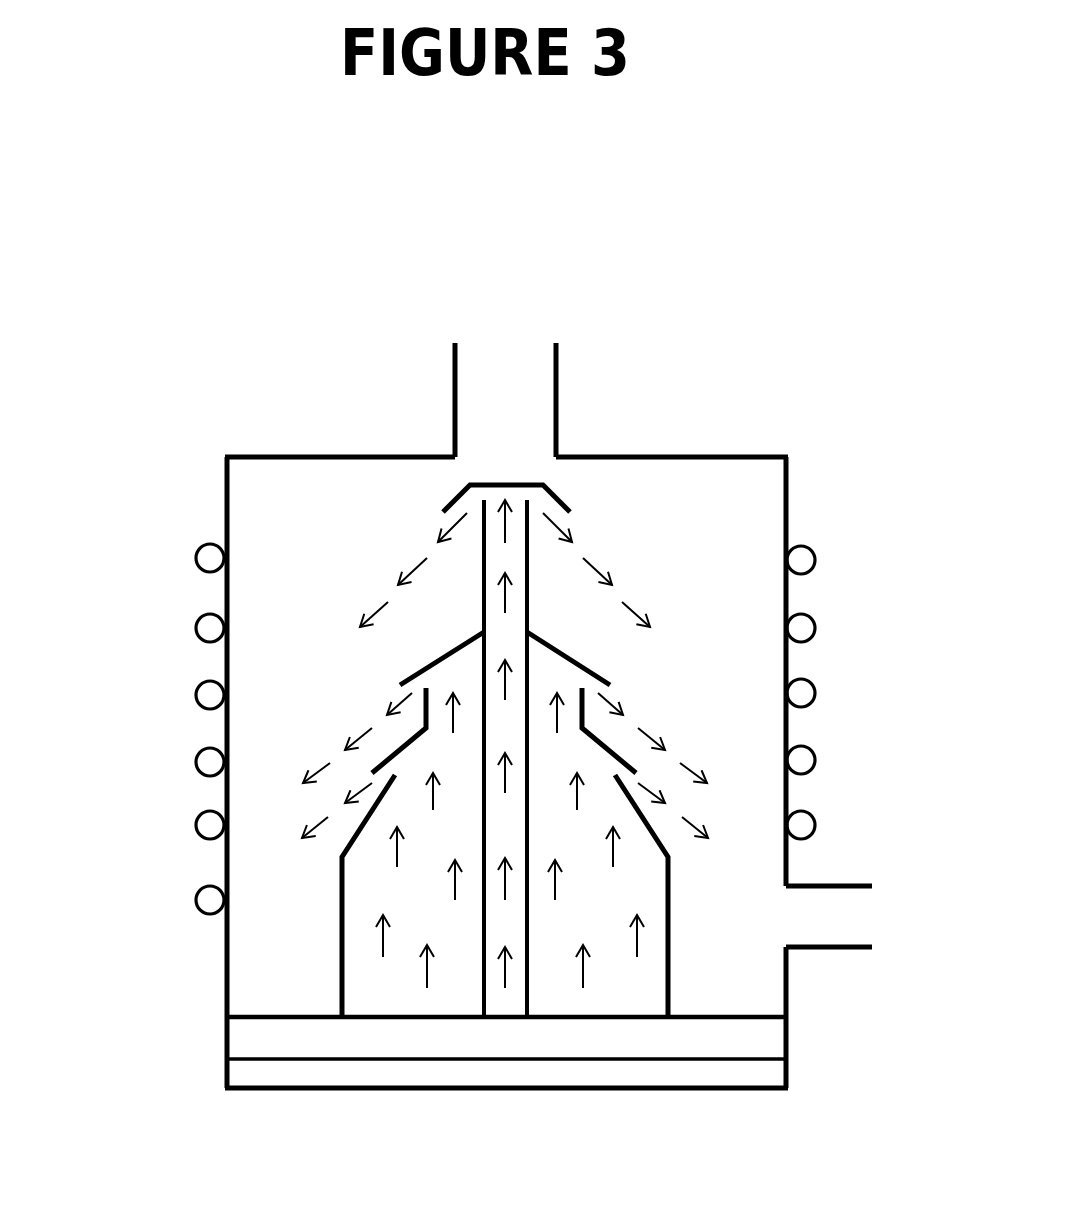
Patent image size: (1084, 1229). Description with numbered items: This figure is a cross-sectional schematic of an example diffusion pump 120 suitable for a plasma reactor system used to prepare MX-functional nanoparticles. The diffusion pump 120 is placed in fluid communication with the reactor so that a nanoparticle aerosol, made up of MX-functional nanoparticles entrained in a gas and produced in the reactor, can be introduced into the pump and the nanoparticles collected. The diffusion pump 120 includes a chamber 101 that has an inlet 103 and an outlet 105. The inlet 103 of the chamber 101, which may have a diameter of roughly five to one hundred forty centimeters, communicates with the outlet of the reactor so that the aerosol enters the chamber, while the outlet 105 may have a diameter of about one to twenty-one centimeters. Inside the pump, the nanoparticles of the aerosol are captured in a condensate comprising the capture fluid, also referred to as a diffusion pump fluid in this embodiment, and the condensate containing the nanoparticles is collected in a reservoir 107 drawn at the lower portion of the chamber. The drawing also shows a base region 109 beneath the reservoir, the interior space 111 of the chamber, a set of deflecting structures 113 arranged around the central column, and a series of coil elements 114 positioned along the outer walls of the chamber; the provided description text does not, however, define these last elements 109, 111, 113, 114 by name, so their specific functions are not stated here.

The diffusion pump 120 is at (325, 285).
The chamber 101 is at (252, 457).
The inlet 103 is at (558, 400).
The outlet 105 is at (842, 886).
The reservoir 107 is at (240, 1029).
The base plate 109 is at (240, 1075).
The reaction chamber interior 111 is at (657, 545).
The deflector 113 is at (470, 485).
The heating coil 114 is at (195, 628).